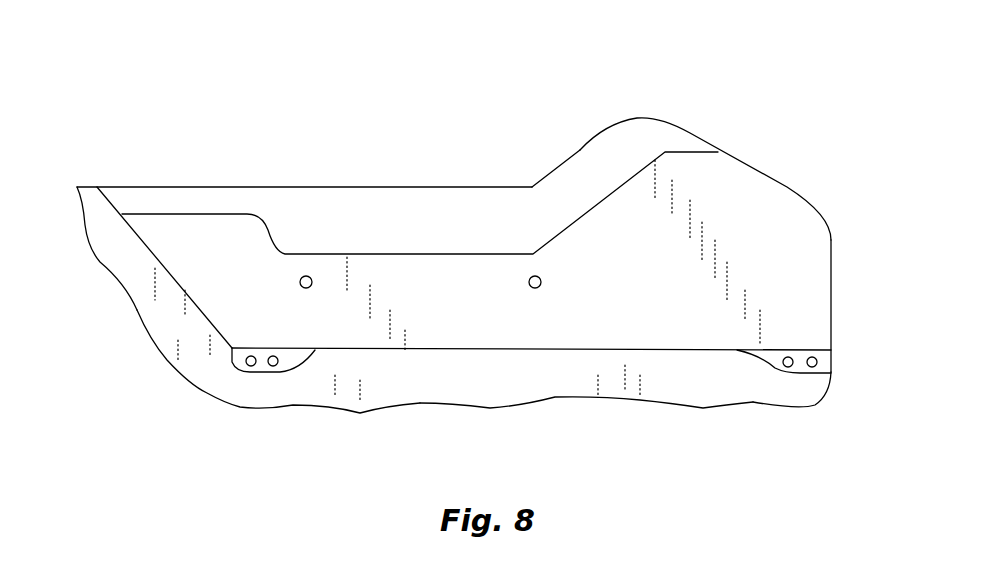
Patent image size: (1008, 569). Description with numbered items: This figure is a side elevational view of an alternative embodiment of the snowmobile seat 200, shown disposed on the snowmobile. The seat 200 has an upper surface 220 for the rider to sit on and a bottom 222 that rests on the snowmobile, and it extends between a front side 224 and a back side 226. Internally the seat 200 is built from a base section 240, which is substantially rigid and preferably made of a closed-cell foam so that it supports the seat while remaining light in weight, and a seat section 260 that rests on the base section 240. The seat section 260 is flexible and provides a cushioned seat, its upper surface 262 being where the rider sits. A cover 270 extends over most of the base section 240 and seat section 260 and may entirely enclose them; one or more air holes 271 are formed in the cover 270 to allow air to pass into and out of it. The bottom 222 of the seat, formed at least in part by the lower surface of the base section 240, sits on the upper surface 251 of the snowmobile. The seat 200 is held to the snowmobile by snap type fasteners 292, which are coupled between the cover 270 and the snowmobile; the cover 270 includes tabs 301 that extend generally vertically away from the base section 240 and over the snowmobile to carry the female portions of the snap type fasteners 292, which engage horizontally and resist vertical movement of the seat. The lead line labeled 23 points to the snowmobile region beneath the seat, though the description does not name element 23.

The chassis assembly 200 is at (511, 82).
The top edge 220 is at (217, 185).
The sloped wall 262 is at (295, 183).
The recessed ledge 260 is at (397, 183).
The raised hump 270 is at (758, 200).
The right end wall 226 is at (831, 313).
The left end wall 224 is at (128, 223).
The side panel 240 is at (227, 288).
The lower flange 292 is at (221, 371).
The left mounting bracket 301 is at (265, 385).
The bottom edge 222 is at (423, 353).
The mounting holes 271 is at (536, 290).
The lower skirt 251 is at (653, 355).
The right mounting bracket 23 is at (733, 386).